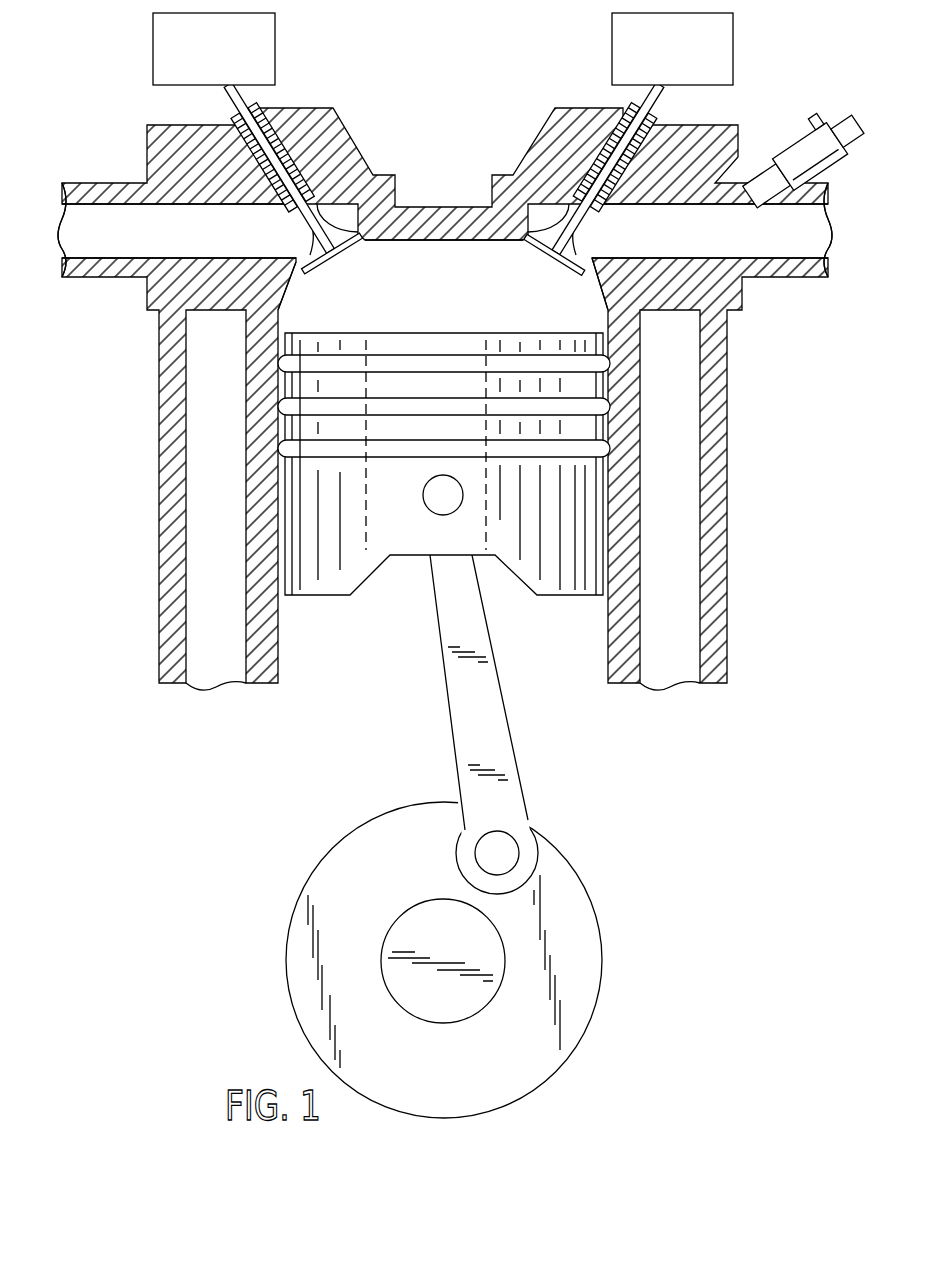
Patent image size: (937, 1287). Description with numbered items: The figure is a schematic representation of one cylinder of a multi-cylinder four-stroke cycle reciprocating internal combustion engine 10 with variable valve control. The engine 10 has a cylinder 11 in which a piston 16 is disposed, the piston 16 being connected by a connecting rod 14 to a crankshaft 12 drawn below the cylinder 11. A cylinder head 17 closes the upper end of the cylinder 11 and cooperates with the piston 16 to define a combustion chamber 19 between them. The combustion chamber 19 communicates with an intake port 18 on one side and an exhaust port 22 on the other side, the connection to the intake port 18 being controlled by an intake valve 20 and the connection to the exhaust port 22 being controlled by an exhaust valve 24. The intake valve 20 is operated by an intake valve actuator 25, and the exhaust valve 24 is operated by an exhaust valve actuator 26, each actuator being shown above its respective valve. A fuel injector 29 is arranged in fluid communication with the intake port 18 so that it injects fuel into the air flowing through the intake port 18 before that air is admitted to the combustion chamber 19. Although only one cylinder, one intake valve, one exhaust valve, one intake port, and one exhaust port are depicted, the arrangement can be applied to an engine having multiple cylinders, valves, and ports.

The internal combustion engine 10 is at (443, 565).
The cylinder 11 is at (280, 642).
The crankshaft 12 is at (566, 890).
The connecting rod 14 is at (457, 712).
The piston 16 is at (577, 572).
The cylinder head 17 is at (427, 210).
The intake port 18 is at (810, 218).
The combustion chamber 19 is at (457, 305).
The intake valve 20 is at (660, 99).
The exhaust port 22 is at (72, 235).
The exhaust valve 24 is at (248, 98).
The intake valve actuator 25 is at (612, 46).
The exhaust valve actuator 26 is at (176, 31).
The fuel injector 29 is at (823, 128).